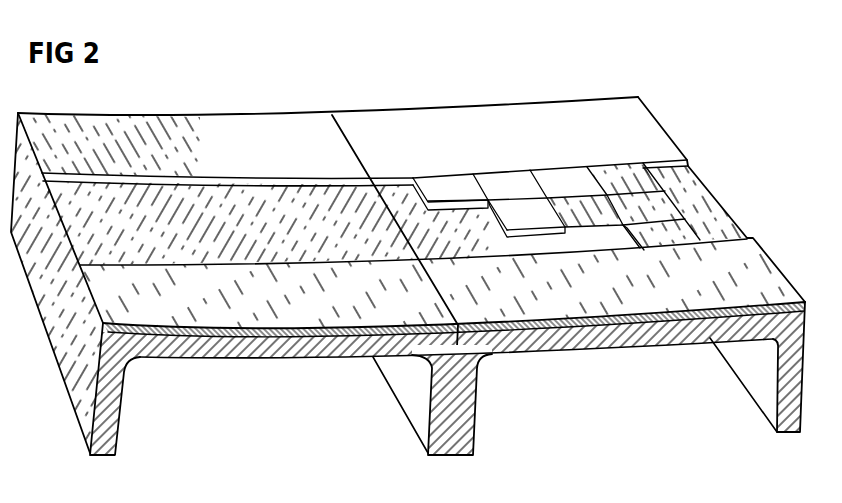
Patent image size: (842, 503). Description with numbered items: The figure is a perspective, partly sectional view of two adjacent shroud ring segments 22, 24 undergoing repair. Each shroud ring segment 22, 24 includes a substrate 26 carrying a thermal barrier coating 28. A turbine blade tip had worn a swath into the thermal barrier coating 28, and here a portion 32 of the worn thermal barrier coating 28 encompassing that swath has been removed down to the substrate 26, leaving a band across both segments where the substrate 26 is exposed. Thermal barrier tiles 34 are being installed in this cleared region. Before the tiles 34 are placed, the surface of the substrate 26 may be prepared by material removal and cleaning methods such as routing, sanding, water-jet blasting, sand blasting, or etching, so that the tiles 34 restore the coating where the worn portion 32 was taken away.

The shroud ring segment 22 is at (219, 96).
The shroud ring segment 24 is at (486, 89).
The substrate 26 is at (628, 337).
The thermal barrier coating 28 is at (619, 150).
The portion of the worn TBC 32 is at (255, 197).
The thermal barrier tiles 34 is at (448, 185).